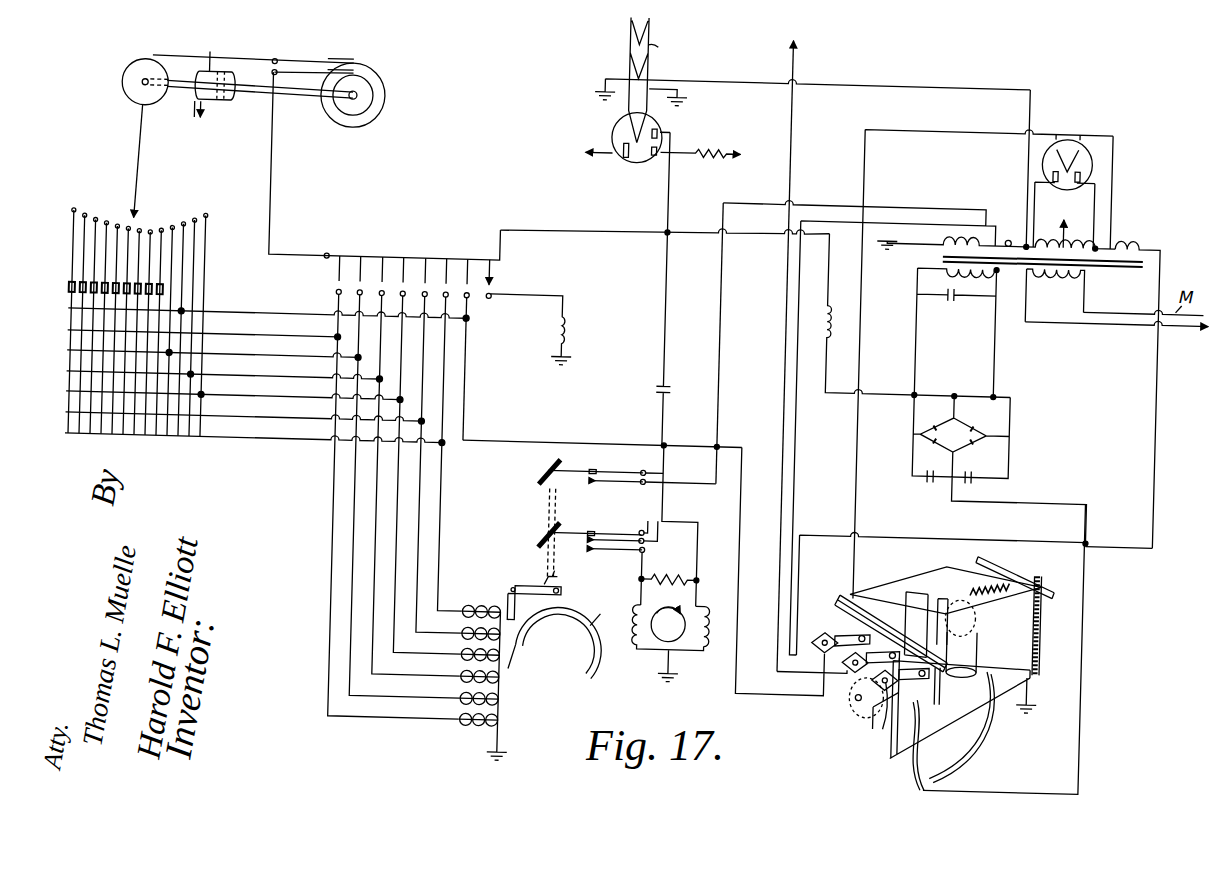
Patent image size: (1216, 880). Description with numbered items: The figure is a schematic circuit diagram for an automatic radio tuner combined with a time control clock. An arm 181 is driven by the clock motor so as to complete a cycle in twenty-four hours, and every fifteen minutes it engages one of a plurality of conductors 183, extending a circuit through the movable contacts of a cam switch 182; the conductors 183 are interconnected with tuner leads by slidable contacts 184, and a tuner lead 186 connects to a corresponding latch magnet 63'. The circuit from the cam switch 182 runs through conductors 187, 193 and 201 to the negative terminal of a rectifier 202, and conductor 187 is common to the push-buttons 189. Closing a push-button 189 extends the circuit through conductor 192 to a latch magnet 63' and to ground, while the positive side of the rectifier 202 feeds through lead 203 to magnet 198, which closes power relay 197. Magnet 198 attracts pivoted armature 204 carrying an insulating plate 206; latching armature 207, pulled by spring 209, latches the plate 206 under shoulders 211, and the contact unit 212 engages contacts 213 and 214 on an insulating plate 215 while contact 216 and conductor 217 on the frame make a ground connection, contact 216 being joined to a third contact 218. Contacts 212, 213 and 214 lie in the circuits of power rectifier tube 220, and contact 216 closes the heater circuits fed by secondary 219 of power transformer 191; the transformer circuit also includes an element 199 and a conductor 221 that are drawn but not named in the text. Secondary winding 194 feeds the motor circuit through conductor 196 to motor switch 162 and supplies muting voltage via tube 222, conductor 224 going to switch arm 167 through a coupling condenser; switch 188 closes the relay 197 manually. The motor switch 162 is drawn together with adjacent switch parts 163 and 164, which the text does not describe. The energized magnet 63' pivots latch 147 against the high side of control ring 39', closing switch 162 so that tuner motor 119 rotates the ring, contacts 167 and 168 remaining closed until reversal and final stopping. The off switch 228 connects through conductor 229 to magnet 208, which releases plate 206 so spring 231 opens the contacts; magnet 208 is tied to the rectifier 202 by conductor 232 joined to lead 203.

The arm 181 is at (134, 115).
The cam switch 182 is at (362, 63).
The conductors 183 is at (167, 231).
The slidable contacts 184 is at (190, 364).
The tuner lead 186 is at (288, 355).
The conductor 187 is at (266, 205).
The switch 188 is at (491, 287).
The push-buttons 189 is at (361, 283).
The power transformer 191 is at (1130, 228).
The conductor 192 is at (356, 580).
The conductor 193 is at (599, 230).
The secondary winding 194 is at (940, 238).
The conductor 196 is at (718, 364).
The power relay 197 is at (1060, 616).
The magnet 198 is at (980, 711).
The condenser 199 is at (974, 263).
The conductor 201 is at (877, 386).
The rectifier 202 is at (997, 420).
The lead 203 is at (1090, 519).
The pivoted armature 204 is at (1050, 580).
The insulating plate 206 is at (884, 593).
The pivoted latching armature 207 is at (942, 691).
The magnet 208 is at (897, 708).
The spring 209 is at (998, 555).
The shoulders 211 is at (982, 631).
The contact unit 212 is at (846, 590).
The contact 213 is at (862, 638).
The contact 214 is at (860, 696).
The insulating plate 215 is at (840, 698).
The contact 216 is at (954, 681).
The conductor 217 is at (992, 702).
The third contact 218 is at (893, 738).
The secondary 219 is at (1002, 228).
The power rectifier tube 220 is at (1059, 130).
The conductor 221 is at (796, 431).
The tube 222 is at (658, 127).
The conductor 224 is at (662, 307).
The off switch 228 is at (466, 302).
The conductor 229 is at (555, 437).
The spring 231 is at (1046, 596).
The conductor 232 is at (924, 762).
The tuner motor 119 is at (656, 654).
The latch 147 is at (526, 590).
The motor switch 162 is at (613, 473).
The contact plate 163 is at (594, 520).
The contact 164 is at (611, 480).
The switch arm 167 is at (571, 541).
The switch arm 168 is at (608, 535).
The latch magnet 63' is at (505, 666).
The control ring 39' is at (563, 647).